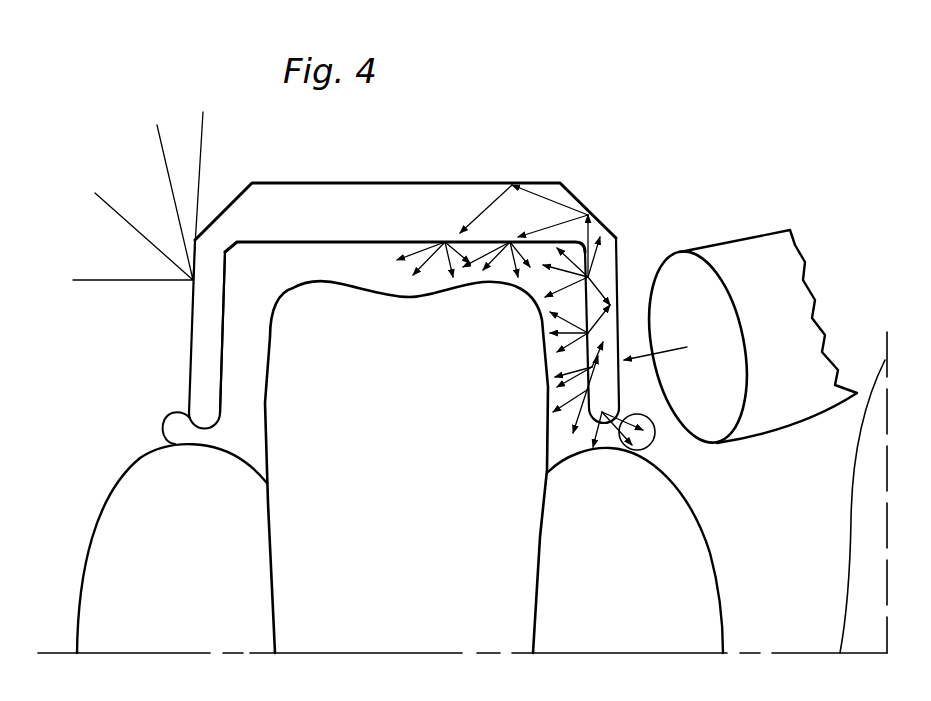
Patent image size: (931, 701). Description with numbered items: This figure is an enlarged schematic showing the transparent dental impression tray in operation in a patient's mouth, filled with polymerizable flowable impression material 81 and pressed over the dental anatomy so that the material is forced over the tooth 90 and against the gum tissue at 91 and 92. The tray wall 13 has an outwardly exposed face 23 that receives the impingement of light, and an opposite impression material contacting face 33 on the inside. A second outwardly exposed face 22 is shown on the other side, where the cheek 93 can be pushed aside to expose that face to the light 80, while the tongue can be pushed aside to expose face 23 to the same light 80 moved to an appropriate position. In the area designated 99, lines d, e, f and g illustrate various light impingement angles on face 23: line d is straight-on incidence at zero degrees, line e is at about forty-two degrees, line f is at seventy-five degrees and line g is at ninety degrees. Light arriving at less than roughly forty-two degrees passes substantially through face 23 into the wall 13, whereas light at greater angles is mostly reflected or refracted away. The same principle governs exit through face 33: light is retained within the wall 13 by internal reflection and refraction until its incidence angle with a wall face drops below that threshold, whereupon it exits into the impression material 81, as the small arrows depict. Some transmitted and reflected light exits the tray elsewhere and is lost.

The wall 13 is at (210, 287).
The face 22 is at (622, 388).
The face 23 is at (186, 395).
The impression material contacting face 33 is at (224, 386).
The light 80 is at (742, 255).
The impression material 81 is at (652, 442).
The tooth 90 is at (411, 460).
The gum tissue 91 is at (191, 559).
The gum tissue 92 is at (635, 578).
The cheek 93 is at (850, 523).
The area of light impingement angles 99 is at (165, 305).